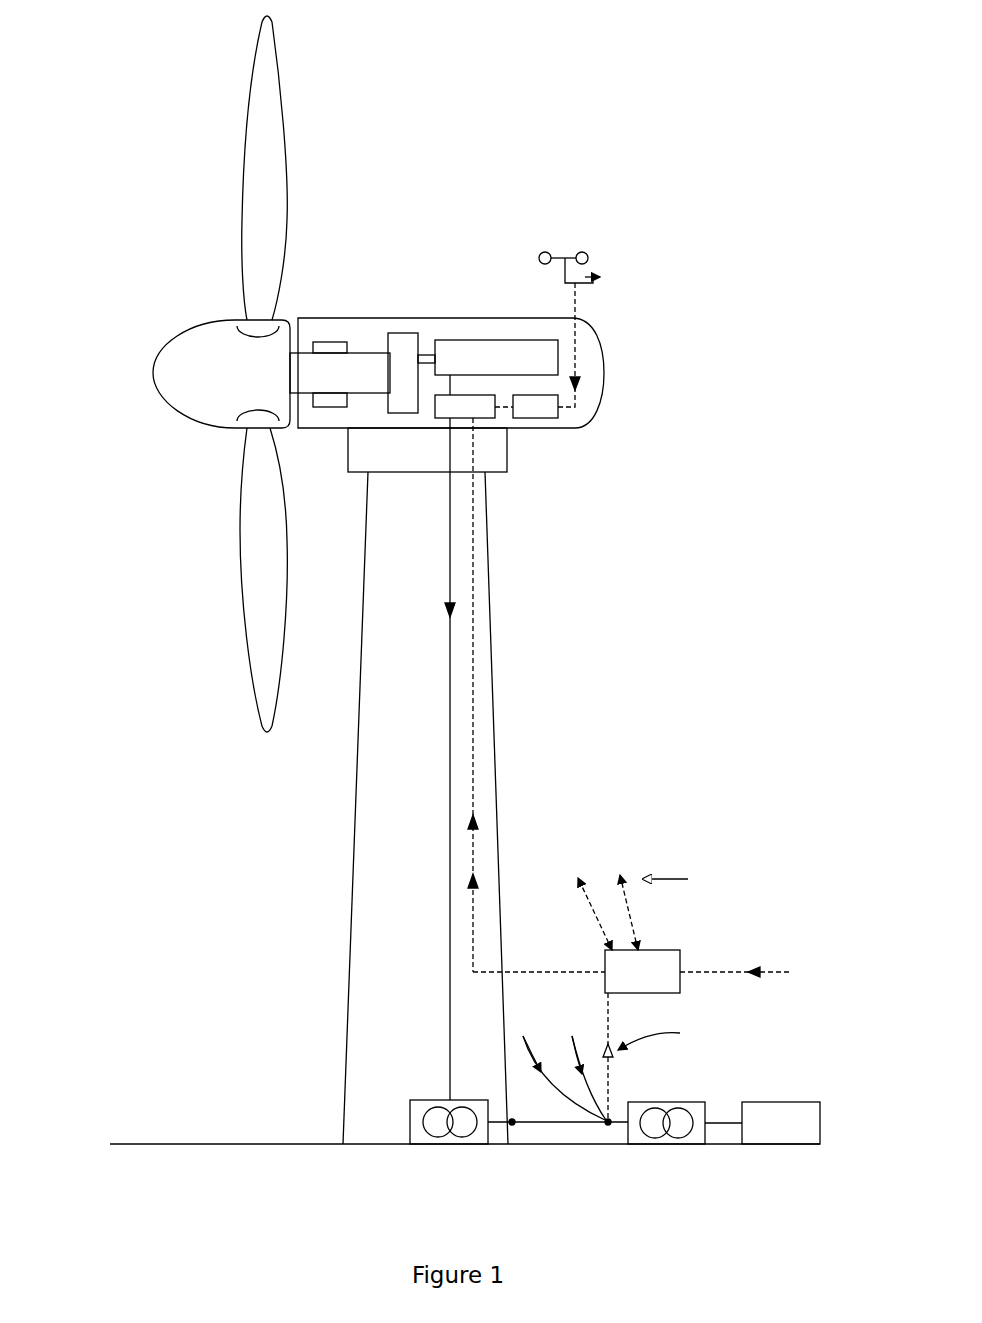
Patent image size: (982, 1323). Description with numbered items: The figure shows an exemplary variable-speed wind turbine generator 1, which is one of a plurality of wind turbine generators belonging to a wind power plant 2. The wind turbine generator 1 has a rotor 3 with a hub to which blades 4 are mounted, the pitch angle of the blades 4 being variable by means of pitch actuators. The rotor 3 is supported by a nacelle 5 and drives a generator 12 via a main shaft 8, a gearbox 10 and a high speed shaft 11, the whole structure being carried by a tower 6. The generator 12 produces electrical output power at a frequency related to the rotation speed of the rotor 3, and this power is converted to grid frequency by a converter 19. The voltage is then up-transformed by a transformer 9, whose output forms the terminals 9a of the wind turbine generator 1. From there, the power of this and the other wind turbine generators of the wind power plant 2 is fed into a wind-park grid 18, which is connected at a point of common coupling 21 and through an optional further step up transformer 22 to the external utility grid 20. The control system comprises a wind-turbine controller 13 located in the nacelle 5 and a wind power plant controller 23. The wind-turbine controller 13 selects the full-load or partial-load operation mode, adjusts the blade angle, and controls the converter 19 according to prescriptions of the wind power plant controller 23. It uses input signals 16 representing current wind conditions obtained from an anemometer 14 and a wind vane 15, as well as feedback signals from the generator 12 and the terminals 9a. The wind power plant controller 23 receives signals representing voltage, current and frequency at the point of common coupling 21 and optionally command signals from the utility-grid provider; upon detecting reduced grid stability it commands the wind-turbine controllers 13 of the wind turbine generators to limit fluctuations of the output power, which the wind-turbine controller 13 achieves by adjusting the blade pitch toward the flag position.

The wind turbine generator 1 is at (442, 153).
The wind power plant 2 is at (151, 203).
The rotor 3 is at (153, 383).
The blades 4 is at (284, 130).
The nacelle 5 is at (329, 318).
The tower 6 is at (348, 897).
The main shaft 8 is at (363, 353).
The transformer 9 is at (420, 1103).
The terminals 9a is at (512, 1125).
The gearbox 10 is at (400, 333).
The high speed shaft 11 is at (430, 353).
The generator 12 is at (493, 340).
The wind-turbine controller 13 is at (560, 416).
The anemometer 14 is at (582, 251).
The wind vane 15 is at (614, 260).
The signals 16 is at (578, 345).
The wind-park grid 18 is at (568, 1125).
The converter 19 is at (445, 418).
The utility grid 20 is at (795, 1144).
The point of common coupling 21 is at (608, 1125).
The step up transformer 22 is at (693, 1144).
The wind power plant controller 23 is at (680, 950).